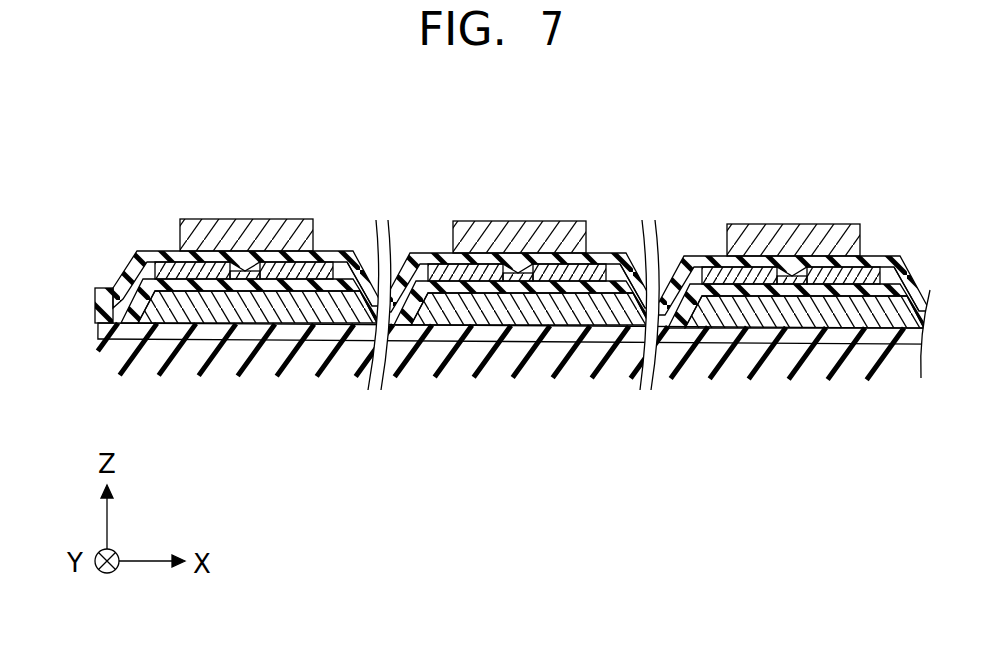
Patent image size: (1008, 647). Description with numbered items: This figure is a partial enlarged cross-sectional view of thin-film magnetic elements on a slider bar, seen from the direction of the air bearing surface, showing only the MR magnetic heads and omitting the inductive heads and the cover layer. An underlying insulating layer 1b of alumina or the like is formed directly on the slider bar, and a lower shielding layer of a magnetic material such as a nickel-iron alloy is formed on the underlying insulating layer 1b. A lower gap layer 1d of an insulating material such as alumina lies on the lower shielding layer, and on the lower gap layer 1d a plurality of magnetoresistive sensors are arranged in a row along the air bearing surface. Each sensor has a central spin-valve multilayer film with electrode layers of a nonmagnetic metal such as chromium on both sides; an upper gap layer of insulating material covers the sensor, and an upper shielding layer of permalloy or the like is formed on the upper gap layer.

The underlying insulating layer 1b is at (98, 341).
The lower gap layer 1d is at (96, 316).